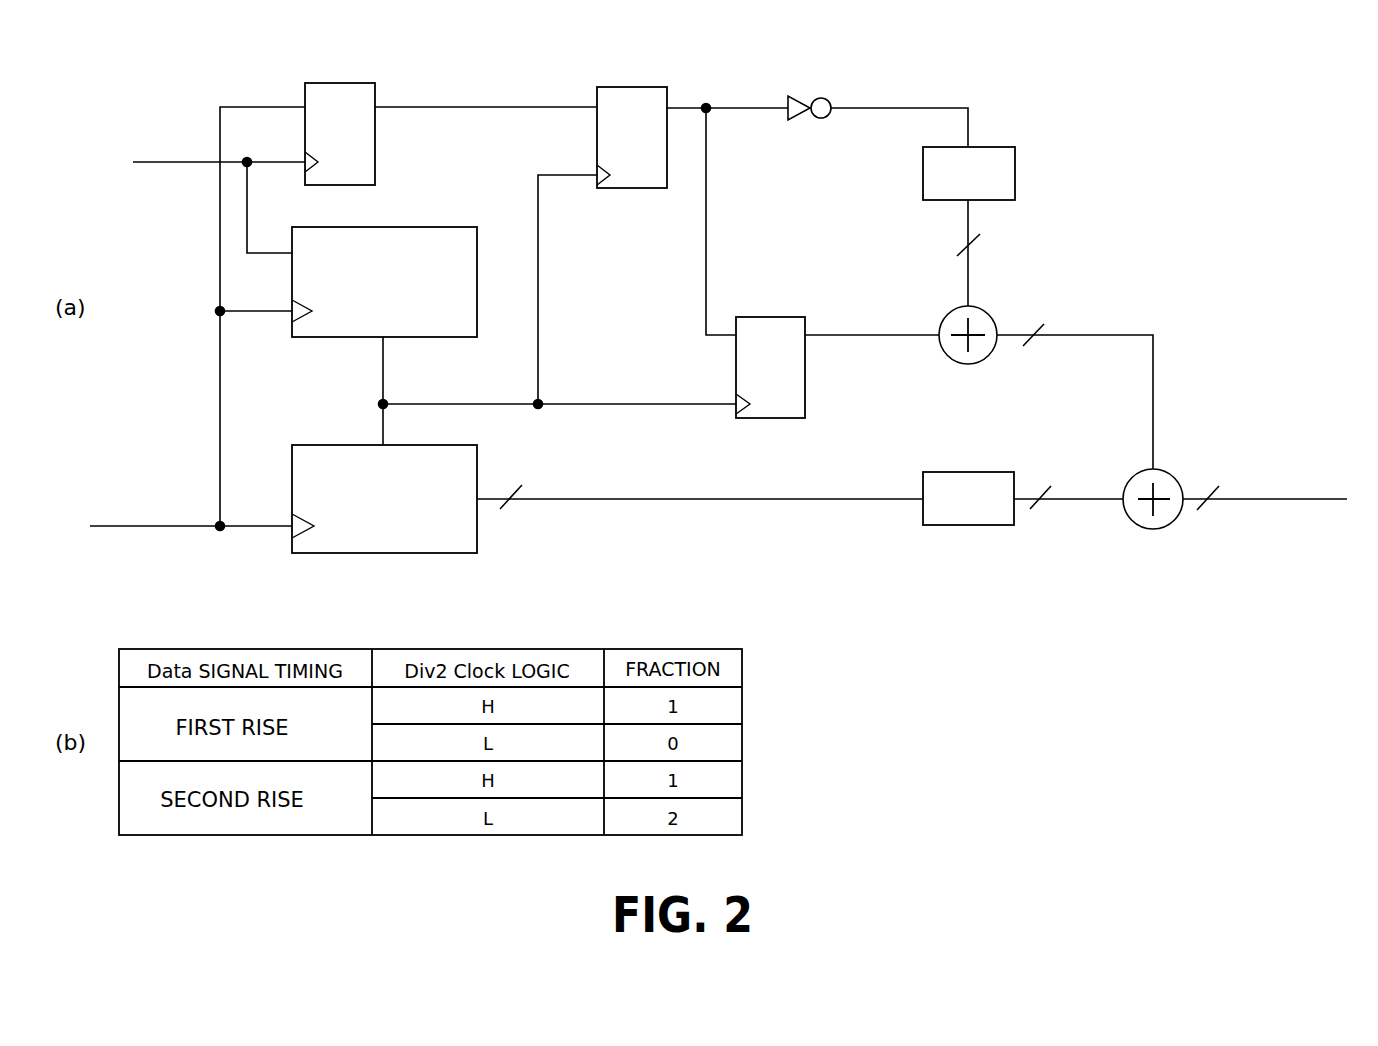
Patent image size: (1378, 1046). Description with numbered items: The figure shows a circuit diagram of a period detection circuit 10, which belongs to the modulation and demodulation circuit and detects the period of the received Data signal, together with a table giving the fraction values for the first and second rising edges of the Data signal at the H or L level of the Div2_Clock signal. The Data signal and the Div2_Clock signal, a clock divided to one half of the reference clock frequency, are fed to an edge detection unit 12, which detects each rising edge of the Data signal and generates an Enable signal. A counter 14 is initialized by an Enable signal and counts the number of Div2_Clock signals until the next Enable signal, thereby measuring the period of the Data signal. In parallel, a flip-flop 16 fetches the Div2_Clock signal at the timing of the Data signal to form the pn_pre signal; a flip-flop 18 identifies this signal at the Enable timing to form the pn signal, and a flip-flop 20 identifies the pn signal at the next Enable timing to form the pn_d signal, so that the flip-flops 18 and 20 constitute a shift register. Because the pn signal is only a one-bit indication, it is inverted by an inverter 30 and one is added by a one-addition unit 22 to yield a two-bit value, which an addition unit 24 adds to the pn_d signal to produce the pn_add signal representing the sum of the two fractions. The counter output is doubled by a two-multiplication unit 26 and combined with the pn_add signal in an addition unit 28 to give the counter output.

The period detection circuit 10 is at (1180, 185).
The edge detection unit 12 is at (420, 227).
The counter 14 is at (308, 445).
The flip-flop 16 is at (345, 83).
The flip-flop 18 is at (638, 87).
The flip-flop 20 is at (775, 317).
The 1-addition unit 22 is at (995, 147).
The addition unit 24 is at (965, 365).
The 2-multiplication unit 26 is at (975, 472).
The addition unit 28 is at (1152, 530).
The inverter 30 is at (800, 96).